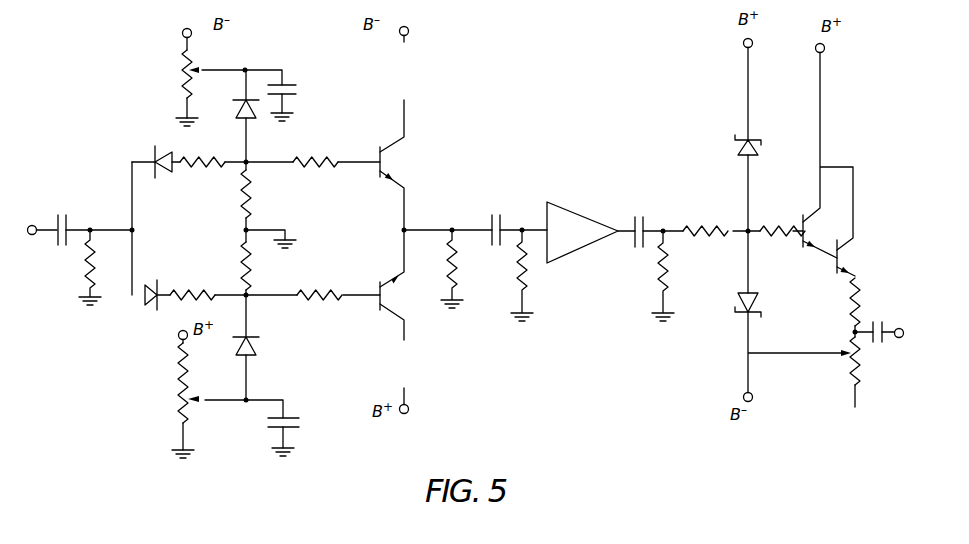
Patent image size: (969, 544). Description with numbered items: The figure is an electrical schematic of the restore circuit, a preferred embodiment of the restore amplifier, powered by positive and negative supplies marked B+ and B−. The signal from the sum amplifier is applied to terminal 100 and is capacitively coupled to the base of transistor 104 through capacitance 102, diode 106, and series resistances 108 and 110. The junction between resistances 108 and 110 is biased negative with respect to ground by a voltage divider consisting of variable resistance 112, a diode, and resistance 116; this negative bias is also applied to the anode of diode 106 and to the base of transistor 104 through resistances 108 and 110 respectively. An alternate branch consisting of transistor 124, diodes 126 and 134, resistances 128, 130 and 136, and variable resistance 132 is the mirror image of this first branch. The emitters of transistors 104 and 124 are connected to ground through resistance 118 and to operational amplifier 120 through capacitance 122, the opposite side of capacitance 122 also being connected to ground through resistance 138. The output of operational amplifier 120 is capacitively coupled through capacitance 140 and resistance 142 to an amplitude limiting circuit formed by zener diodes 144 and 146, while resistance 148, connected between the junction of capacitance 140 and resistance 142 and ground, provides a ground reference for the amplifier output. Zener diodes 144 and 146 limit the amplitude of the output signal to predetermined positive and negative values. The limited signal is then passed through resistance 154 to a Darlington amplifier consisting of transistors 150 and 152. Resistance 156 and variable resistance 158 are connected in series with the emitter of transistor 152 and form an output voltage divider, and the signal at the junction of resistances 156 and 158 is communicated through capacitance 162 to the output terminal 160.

The terminal 100 is at (52, 216).
The capacitance 102 is at (52, 237).
The transistor 104 is at (377, 175).
The diode 106 is at (155, 147).
The resistance 108 is at (207, 170).
The resistance 110 is at (296, 150).
The variable resistance 112 is at (180, 79).
The resistance 116 is at (251, 195).
The resistance 118 is at (457, 276).
The operational amplifier 120 is at (576, 213).
The capacitance 122 is at (516, 199).
The transistor 124 is at (375, 308).
The diode 126 is at (157, 308).
The resistance 128 is at (219, 275).
The resistance 130 is at (317, 301).
The variable resistance 132 is at (180, 394).
The diode 134 is at (255, 346).
The resistance 136 is at (249, 270).
The resistance 138 is at (530, 286).
The capacitance 140 is at (656, 196).
The resistance 142 is at (704, 238).
The zener diode 144 is at (731, 142).
The zener diode 146 is at (739, 314).
The resistance 148 is at (656, 280).
The transistor 150 is at (808, 213).
The transistor 152 is at (832, 270).
The resistance 154 is at (782, 241).
The resistance 156 is at (860, 310).
The variable resistance 158 is at (850, 365).
The output terminal 160 is at (899, 338).
The capacitance 162 is at (870, 344).